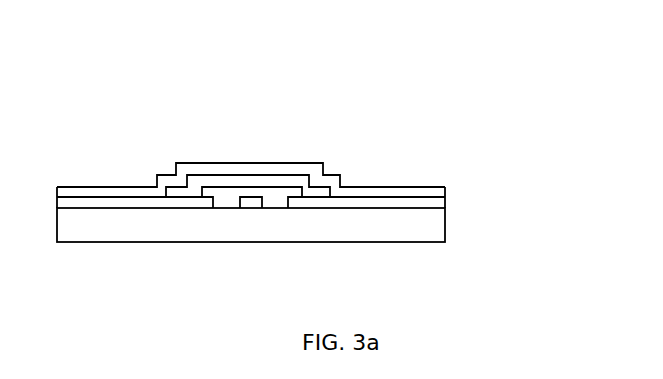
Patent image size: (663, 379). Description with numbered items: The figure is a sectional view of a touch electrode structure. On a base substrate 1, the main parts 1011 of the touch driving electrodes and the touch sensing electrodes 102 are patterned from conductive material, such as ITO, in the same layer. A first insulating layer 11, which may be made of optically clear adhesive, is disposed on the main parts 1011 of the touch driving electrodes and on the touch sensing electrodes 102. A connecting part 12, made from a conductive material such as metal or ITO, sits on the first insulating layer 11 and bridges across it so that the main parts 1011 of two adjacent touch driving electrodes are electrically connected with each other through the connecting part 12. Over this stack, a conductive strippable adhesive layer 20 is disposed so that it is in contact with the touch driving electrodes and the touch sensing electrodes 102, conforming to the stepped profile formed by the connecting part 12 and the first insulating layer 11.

The base substrate 1 is at (432, 225).
The main parts of the touch driving electrodes 1011 is at (83, 204).
The touch sensing electrodes 102 is at (252, 208).
The first insulating layer 11 is at (272, 197).
The connecting part 12 is at (253, 180).
The conductive strippable adhesive layer 20 is at (220, 167).